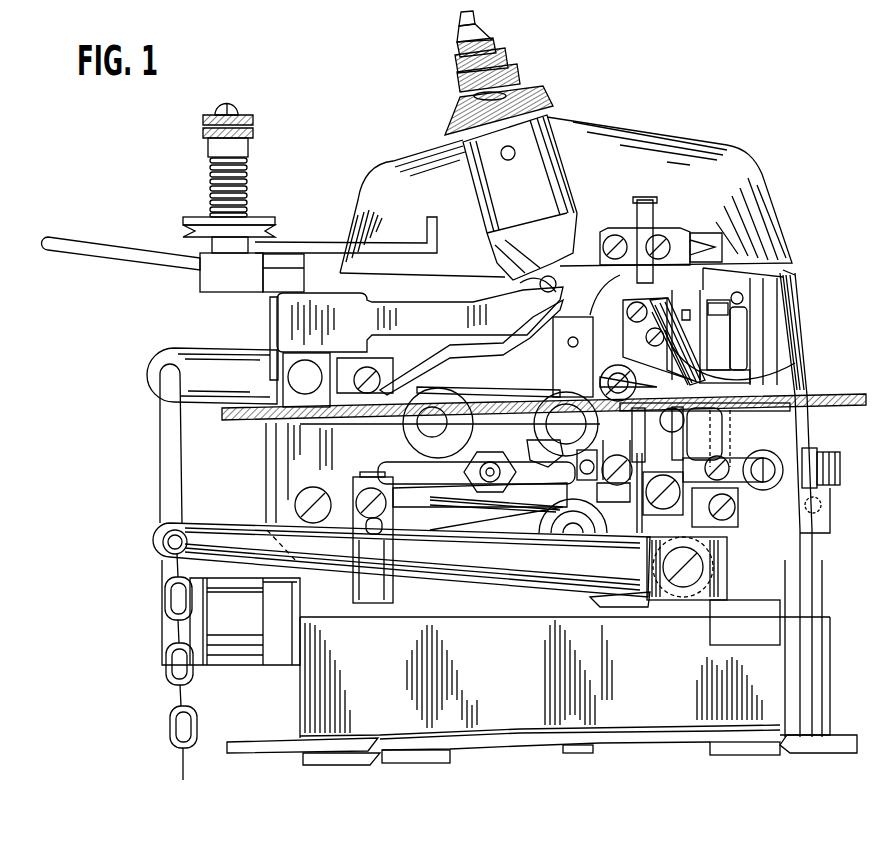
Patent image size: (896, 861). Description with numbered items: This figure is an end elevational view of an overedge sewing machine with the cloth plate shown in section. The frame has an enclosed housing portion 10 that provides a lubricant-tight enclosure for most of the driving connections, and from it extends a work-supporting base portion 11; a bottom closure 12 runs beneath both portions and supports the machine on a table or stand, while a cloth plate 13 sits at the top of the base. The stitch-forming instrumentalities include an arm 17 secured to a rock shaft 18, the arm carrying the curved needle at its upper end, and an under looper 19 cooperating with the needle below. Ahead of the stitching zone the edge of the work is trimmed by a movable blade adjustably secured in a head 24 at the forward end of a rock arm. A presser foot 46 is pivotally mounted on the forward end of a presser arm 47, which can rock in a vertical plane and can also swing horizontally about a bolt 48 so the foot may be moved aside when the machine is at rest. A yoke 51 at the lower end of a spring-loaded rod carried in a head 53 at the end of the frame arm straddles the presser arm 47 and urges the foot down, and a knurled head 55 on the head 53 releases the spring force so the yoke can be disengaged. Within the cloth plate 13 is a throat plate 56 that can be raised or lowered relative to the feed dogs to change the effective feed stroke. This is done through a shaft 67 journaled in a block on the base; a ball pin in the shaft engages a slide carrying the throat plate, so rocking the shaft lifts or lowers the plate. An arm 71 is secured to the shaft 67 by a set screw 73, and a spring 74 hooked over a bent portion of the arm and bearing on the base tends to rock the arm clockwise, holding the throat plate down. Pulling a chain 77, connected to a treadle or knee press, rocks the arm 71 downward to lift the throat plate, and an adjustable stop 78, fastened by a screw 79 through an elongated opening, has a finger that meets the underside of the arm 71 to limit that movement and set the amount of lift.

The enclosed housing portion 10 is at (803, 336).
The work-supporting base portion 11 is at (642, 700).
The bottom closure 12 is at (520, 743).
The cloth plate 13 is at (852, 392).
The arm 17 is at (583, 352).
The rock shaft 18 is at (556, 435).
The under looper 19 is at (675, 449).
The head 24 is at (675, 290).
The presser foot 46 is at (798, 386).
The presser arm 47 is at (444, 312).
The bolt 48 is at (270, 299).
The yoke 51 is at (566, 287).
The head 53 is at (576, 192).
The knurled head 55 is at (548, 102).
The throat plate 56 is at (773, 404).
The shaft 67 is at (688, 582).
The arm 71 is at (456, 572).
The set screw 73 is at (746, 566).
The spring 74 is at (632, 606).
The chain 77 is at (166, 724).
The adjustable stop 78 is at (379, 602).
The screw 79 is at (358, 497).